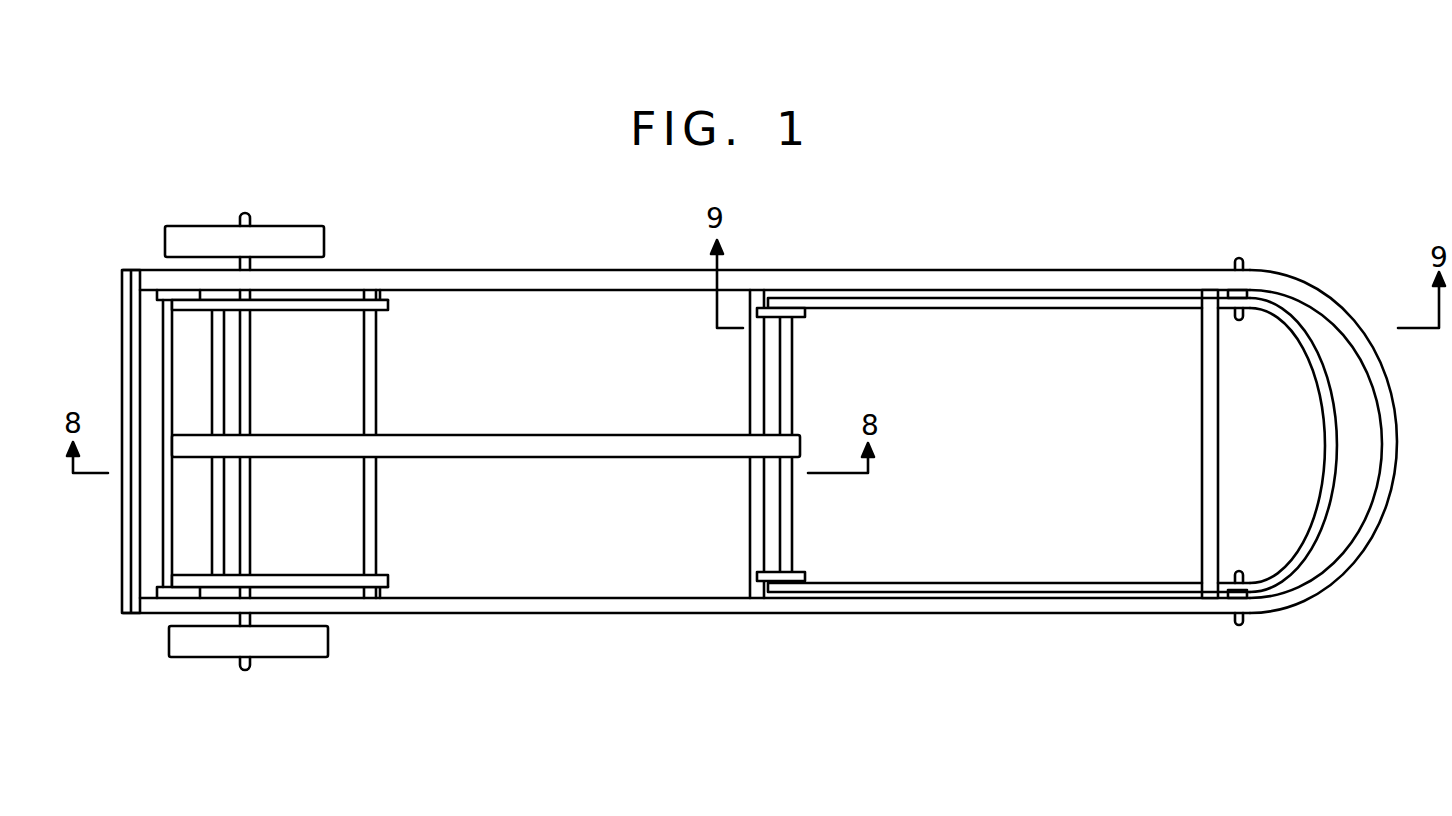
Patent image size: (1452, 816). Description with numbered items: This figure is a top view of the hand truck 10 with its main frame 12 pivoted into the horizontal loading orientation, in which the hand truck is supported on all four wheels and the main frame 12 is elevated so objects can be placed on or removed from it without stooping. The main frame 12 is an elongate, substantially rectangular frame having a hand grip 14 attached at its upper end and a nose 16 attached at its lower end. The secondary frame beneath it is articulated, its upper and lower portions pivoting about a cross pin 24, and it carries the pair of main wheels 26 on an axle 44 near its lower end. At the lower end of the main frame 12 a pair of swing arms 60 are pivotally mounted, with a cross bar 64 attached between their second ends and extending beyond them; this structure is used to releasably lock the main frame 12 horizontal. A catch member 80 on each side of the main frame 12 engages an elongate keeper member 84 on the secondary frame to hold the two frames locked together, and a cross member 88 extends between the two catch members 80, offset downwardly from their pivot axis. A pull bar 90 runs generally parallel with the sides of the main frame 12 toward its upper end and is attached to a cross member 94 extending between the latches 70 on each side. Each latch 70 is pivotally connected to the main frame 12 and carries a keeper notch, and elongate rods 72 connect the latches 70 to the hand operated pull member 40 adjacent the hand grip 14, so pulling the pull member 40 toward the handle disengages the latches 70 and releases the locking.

The hand truck 10 is at (828, 647).
The main frame 12 is at (473, 278).
The hand grip 14 is at (1360, 533).
The nose 16 is at (125, 305).
The cross pin 24 is at (755, 370).
The main wheels 26 is at (213, 238).
The pull member 40 is at (1318, 368).
The axle 44 is at (247, 415).
The swing arms 60 is at (328, 300).
The cross bar 64 is at (373, 373).
The latch 70 is at (793, 317).
The elongate rods 72 is at (1028, 303).
The catch member 80 is at (184, 292).
The keeper member 84 is at (218, 352).
The cross member 88 is at (167, 387).
The pull bar 90 is at (388, 447).
The cross member 94 is at (787, 390).